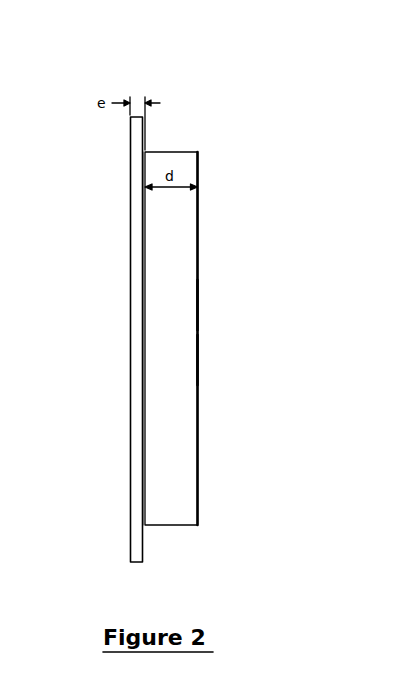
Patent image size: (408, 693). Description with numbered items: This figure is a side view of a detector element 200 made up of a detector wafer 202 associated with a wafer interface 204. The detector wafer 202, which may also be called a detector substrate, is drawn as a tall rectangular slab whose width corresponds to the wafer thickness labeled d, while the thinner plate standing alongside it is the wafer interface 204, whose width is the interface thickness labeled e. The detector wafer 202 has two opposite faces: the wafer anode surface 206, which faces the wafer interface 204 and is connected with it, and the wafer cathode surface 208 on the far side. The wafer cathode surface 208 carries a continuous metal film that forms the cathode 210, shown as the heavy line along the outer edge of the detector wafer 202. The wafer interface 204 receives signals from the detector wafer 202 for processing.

The detector element 200 is at (333, 56).
The detector wafer 202 is at (202, 338).
The wafer interface 204 is at (100, 339).
The wafer anode surface 206 is at (143, 443).
The wafer cathode surface 208 is at (235, 297).
The cathode 210 is at (235, 351).